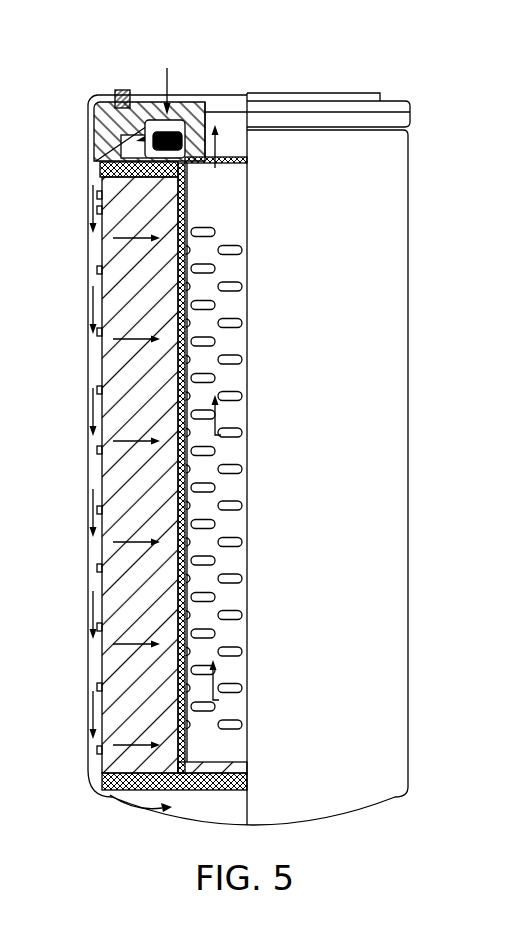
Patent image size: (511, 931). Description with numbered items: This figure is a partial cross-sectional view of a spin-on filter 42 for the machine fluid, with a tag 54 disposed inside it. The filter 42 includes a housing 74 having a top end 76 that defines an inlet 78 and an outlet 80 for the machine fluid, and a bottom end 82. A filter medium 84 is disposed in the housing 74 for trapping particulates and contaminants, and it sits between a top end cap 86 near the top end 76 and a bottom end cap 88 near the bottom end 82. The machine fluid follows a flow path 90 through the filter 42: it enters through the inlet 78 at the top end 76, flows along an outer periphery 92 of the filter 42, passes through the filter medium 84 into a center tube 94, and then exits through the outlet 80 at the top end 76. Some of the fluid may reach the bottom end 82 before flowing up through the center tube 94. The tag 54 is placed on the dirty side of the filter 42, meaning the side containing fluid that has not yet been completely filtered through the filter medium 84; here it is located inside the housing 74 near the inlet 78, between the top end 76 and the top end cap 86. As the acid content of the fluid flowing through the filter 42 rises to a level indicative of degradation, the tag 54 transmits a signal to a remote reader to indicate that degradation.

The filter 42 is at (407, 212).
The tag 54 is at (128, 158).
The housing 74 is at (88, 497).
The top end 76 is at (280, 93).
The inlet 78 is at (157, 118).
The outlet 80 is at (222, 110).
The bottom end 82 is at (147, 812).
The filter medium 84 is at (110, 262).
The top end cap 86 is at (103, 172).
The bottom end cap 88 is at (110, 778).
The flow path 90 is at (222, 138).
The outer periphery 92 is at (97, 367).
The center tube 94 is at (236, 527).